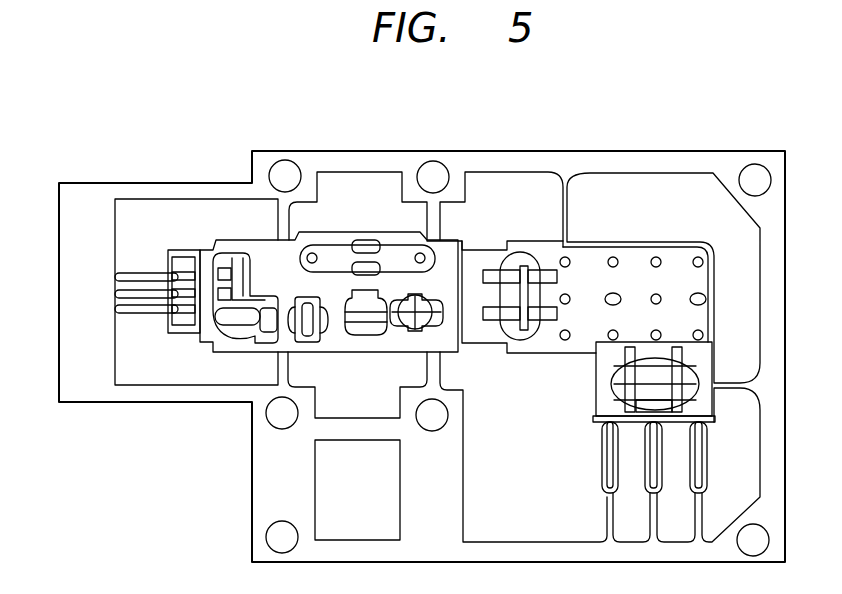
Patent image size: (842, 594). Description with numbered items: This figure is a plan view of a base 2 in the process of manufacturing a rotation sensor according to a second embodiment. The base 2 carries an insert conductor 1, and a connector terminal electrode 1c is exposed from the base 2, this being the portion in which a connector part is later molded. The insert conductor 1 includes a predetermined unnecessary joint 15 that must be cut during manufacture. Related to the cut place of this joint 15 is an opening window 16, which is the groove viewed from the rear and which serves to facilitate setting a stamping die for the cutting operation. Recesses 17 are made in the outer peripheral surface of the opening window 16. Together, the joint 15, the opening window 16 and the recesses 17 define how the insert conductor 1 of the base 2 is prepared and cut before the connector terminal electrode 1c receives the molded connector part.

The insert conductor 1 is at (533, 323).
The connector terminal electrode 1c is at (603, 478).
The base 2 is at (650, 242).
The joint 15 is at (517, 318).
The opening window 16 is at (522, 252).
The recesses 17 is at (543, 322).